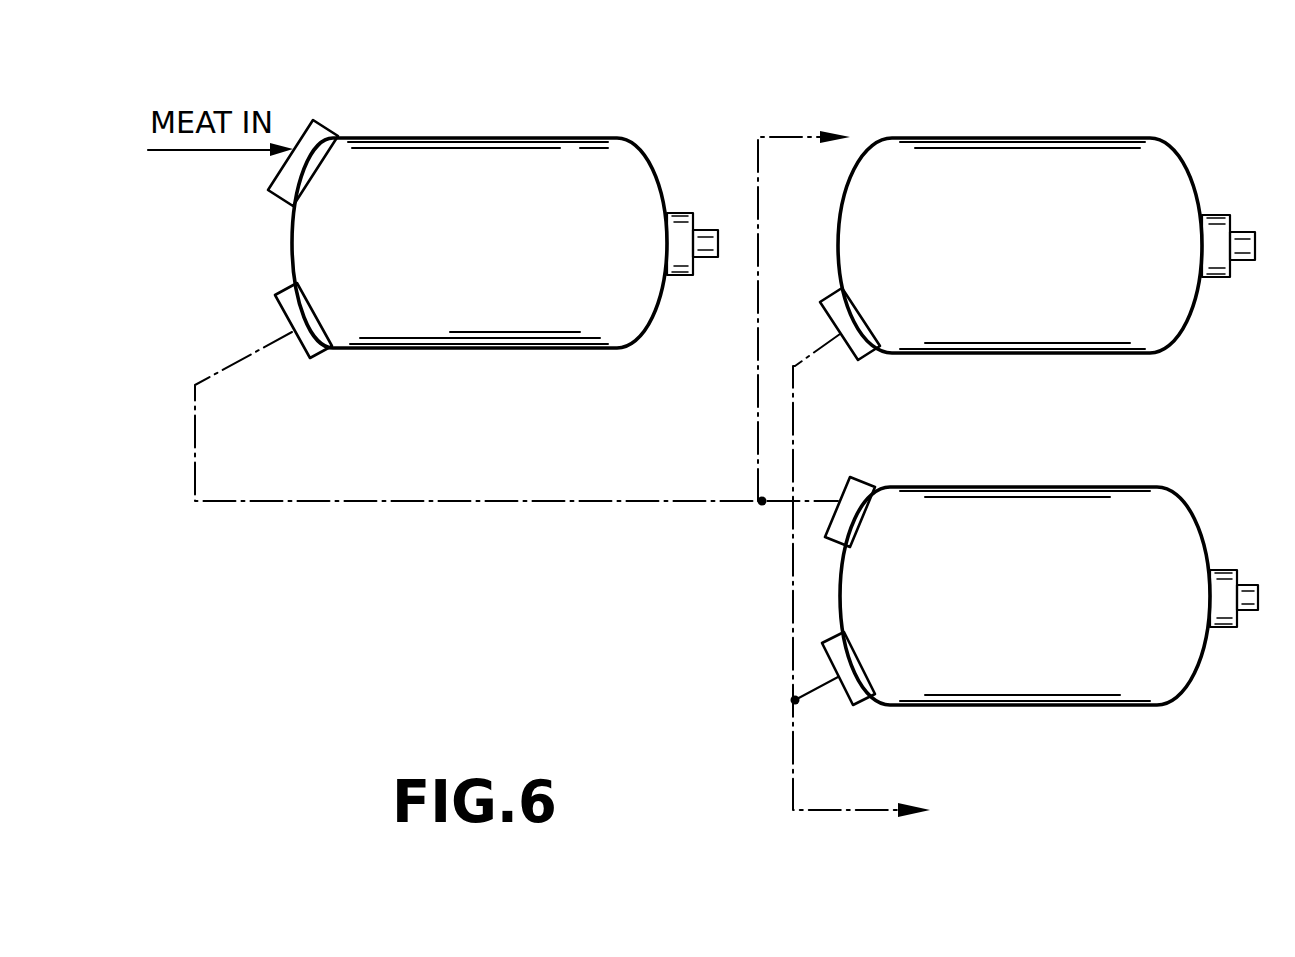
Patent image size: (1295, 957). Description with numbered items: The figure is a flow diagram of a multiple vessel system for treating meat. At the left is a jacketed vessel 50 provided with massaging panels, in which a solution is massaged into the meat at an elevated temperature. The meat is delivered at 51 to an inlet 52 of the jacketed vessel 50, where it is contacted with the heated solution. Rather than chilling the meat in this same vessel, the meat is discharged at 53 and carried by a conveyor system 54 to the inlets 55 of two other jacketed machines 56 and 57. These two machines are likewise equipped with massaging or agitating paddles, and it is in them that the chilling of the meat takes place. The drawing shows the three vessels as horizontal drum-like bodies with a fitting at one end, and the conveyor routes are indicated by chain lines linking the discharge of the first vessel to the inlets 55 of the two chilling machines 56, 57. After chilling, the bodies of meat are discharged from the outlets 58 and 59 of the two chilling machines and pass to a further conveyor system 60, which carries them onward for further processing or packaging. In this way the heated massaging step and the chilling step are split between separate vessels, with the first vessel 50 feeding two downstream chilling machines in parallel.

The jacketed vessel 50 is at (600, 128).
The meat delivery point 51 is at (208, 152).
The inlet 52 is at (313, 120).
The meat discharge point 53 is at (282, 312).
The conveyor system 54 is at (362, 503).
The inlets 55 is at (866, 490).
The jacketed machine 56 is at (1136, 128).
The jacketed machine 57 is at (1157, 480).
The outlet 58 is at (830, 297).
The outlet 59 is at (860, 700).
The conveyor system 60 is at (792, 610).